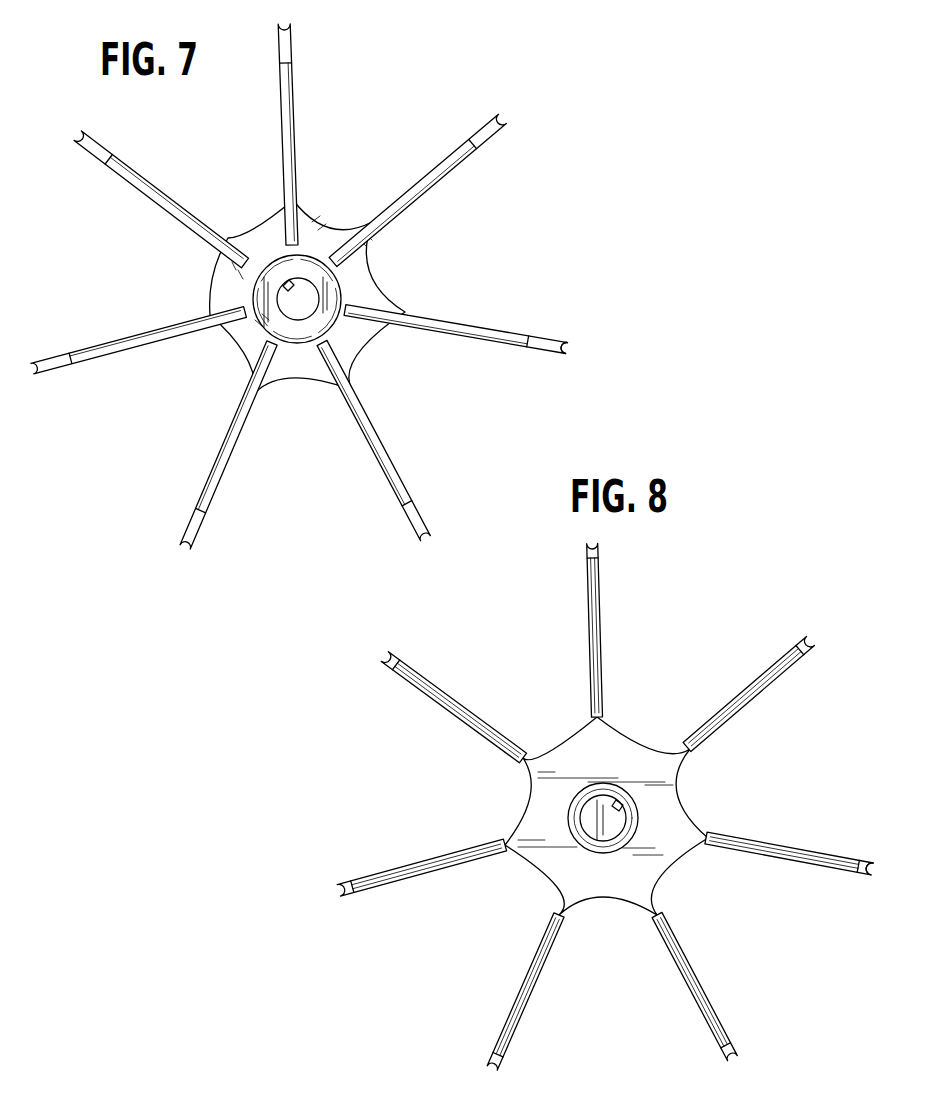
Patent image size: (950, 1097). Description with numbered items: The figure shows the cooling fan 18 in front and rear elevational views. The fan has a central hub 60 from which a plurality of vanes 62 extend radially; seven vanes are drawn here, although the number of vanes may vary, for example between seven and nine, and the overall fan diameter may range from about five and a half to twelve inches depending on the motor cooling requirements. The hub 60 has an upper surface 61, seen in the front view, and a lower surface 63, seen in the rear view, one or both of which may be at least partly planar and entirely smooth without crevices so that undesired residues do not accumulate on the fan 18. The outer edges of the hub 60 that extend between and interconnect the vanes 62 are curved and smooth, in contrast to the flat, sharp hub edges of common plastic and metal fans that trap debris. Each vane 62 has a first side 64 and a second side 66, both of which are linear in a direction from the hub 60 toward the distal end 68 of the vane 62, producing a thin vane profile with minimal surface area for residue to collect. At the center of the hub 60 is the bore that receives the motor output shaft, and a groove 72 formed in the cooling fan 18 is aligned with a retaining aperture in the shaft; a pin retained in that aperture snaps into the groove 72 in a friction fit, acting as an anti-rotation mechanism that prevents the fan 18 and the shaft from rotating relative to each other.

In FIG. 7, the cooling fan 18 is at (345, 286).
In FIG. 8, the cooling fan 18 is at (564, 806).
In FIG. 7, the hub 60 is at (330, 226).
In FIG. 8, the hub 60 is at (637, 745).
In FIG. 7, the upper surface 61 is at (255, 253).
In FIG. 8, the lower surface 63 is at (587, 887).
In FIG. 7, the vane 62 is at (501, 343).
In FIG. 8, the vane 62 is at (804, 867).
In FIG. 7, the first side 64 is at (487, 325).
In FIG. 8, the first side 64 is at (782, 863).
In FIG. 7, the second side 66 is at (472, 338).
In FIG. 8, the second side 66 is at (800, 850).
In FIG. 7, the distal end 68 is at (578, 352).
In FIG. 8, the distal end 68 is at (880, 868).
In FIG. 7, the groove 72 is at (277, 282).
In FIG. 8, the groove 72 is at (627, 800).